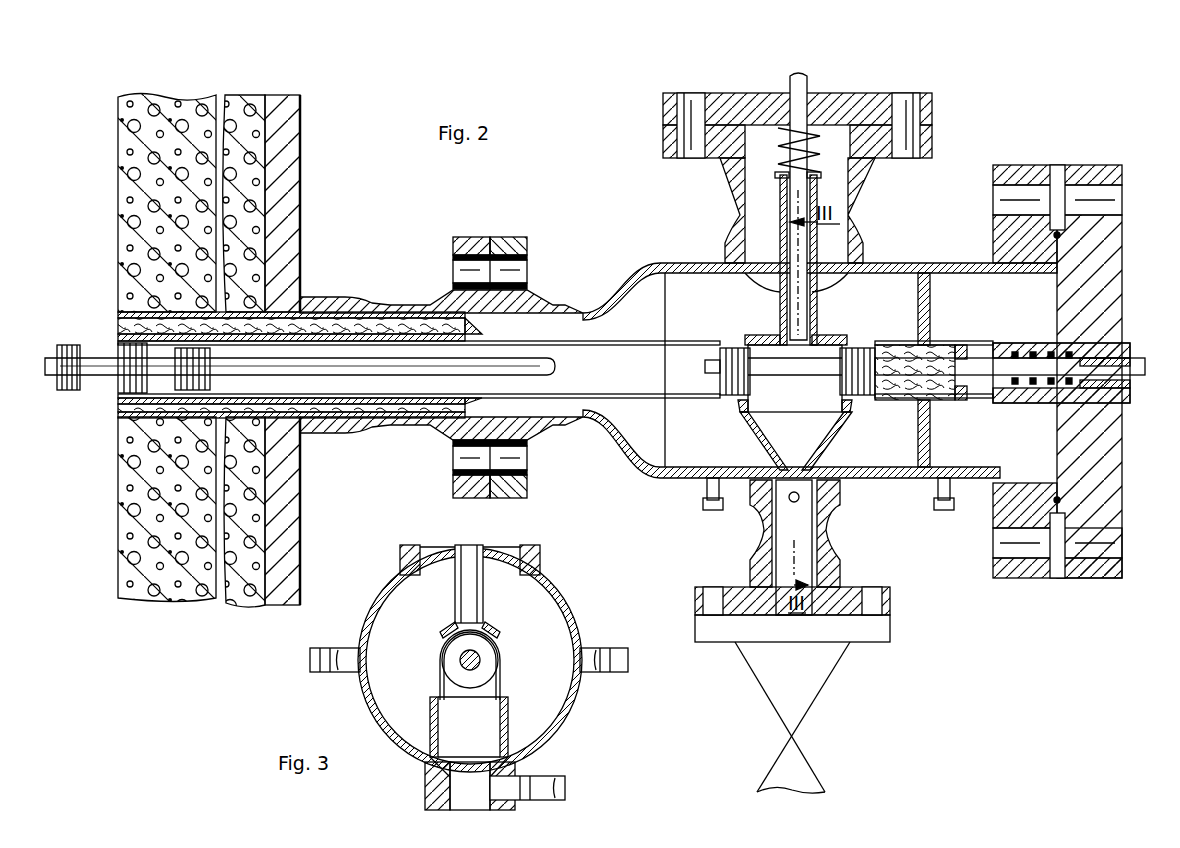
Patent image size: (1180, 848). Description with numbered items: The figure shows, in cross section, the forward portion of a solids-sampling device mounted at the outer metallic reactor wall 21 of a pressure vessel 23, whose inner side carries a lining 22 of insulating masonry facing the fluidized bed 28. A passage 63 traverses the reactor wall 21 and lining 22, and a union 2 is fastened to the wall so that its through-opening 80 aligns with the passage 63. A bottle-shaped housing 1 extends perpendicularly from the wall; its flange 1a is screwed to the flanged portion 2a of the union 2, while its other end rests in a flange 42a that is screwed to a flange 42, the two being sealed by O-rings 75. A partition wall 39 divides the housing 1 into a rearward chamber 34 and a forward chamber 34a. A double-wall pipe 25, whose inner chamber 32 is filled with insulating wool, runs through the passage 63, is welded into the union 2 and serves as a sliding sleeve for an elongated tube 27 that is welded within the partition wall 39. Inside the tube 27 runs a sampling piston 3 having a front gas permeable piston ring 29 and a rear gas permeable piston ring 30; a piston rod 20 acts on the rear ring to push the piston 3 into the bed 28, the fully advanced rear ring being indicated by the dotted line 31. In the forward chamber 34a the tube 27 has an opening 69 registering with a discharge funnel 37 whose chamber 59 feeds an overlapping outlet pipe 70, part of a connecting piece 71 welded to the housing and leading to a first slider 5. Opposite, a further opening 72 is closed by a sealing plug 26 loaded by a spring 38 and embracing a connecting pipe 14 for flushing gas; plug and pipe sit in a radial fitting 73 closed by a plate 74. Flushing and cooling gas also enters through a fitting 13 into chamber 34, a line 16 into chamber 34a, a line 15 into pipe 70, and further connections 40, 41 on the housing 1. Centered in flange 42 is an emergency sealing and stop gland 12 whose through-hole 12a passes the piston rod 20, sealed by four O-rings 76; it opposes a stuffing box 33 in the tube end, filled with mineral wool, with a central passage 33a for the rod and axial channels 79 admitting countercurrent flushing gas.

In FIG. 2, the bottle-shaped housing 1 is at (612, 440).
In FIG. 3, the bottle-shaped housing 1 is at (385, 590).
In FIG. 2, the flange 1a is at (508, 237).
In FIG. 2, the union 2 is at (455, 292).
In FIG. 2, the flanged portion 2a is at (470, 237).
In FIG. 2, the sampling piston 3 is at (97, 380).
In FIG. 2, the first slider 5 is at (800, 685).
In FIG. 2, the emergency sealing and stop gland 12 is at (1025, 404).
In FIG. 2, the centered through-hole 12a is at (1000, 358).
In FIG. 2, the fitting 13 is at (934, 503).
In FIG. 2, the connecting pipe 14 is at (792, 83).
In FIG. 3, the connecting pipe 14 is at (468, 555).
In FIG. 2, the line 15 is at (794, 502).
In FIG. 3, the line 15 is at (555, 785).
In FIG. 2, the line 16 is at (703, 502).
In FIG. 2, the piston rod 20 is at (543, 360).
In FIG. 3, the piston rod 20 is at (482, 655).
In FIG. 2, the reactor wall 21 is at (287, 128).
In FIG. 2, the lining 22 is at (135, 147).
In FIG. 2, the pressure vessel 23 is at (300, 167).
In FIG. 2, the double-wall pipe 25 is at (332, 312).
In FIG. 2, the sealing plug 26 is at (780, 303).
In FIG. 3, the sealing plug 26 is at (453, 622).
In FIG. 2, the elongated tube 27 is at (612, 322).
In FIG. 3, the elongated tube 27 is at (440, 664).
In FIG. 2, the fluidized bed 28 is at (104, 277).
In FIG. 2, the front gas permeable piston ring 29 is at (75, 392).
In FIG. 2, the rear gas permeable piston ring 30 is at (192, 392).
In FIG. 2, the dotted line 31 is at (118, 345).
In FIG. 2, the inner chamber 32 is at (355, 315).
In FIG. 2, the stuffing box 33 is at (935, 345).
In FIG. 2, the central passage 33a is at (935, 395).
In FIG. 2, the rearward chamber 34 is at (966, 444).
In FIG. 2, the forward chamber 34a is at (720, 459).
In FIG. 2, the discharge funnel 37 is at (845, 435).
In FIG. 3, the discharge funnel 37 is at (510, 715).
In FIG. 2, the spring 38 is at (785, 175).
In FIG. 2, the partition wall 39 is at (932, 283).
In FIG. 3, the connection 40 is at (608, 647).
In FIG. 3, the connection 41 is at (328, 675).
In FIG. 2, the flange 42 is at (1090, 165).
In FIG. 2, the flange 42a is at (1032, 165).
In FIG. 2, the chamber 59 is at (845, 400).
In FIG. 3, the chamber 59 is at (480, 738).
In FIG. 2, the passage 63 is at (286, 418).
In FIG. 2, the opening 69 is at (738, 402).
In FIG. 2, the outlet pipe 70 is at (836, 507).
In FIG. 2, the connecting piece 71 is at (830, 580).
In FIG. 2, the further opening 72 is at (762, 333).
In FIG. 2, the fitting 73 is at (860, 198).
In FIG. 2, the plate 74 is at (740, 100).
In FIG. 2, the O-rings 75 is at (1057, 505).
In FIG. 2, the O-rings 76 is at (993, 420).
In FIG. 2, the axial channels 79 is at (968, 358).
In FIG. 2, the through-opening 80 is at (425, 432).